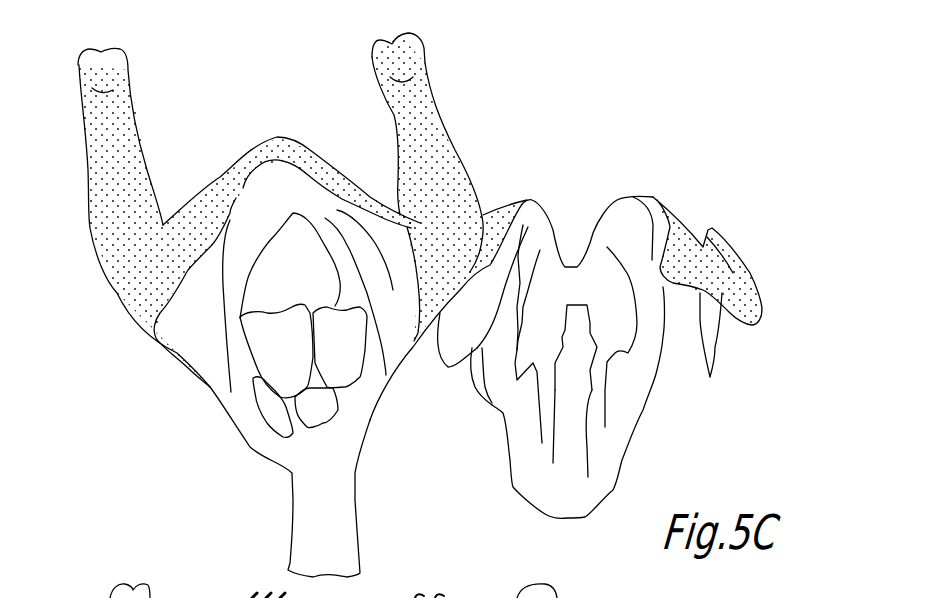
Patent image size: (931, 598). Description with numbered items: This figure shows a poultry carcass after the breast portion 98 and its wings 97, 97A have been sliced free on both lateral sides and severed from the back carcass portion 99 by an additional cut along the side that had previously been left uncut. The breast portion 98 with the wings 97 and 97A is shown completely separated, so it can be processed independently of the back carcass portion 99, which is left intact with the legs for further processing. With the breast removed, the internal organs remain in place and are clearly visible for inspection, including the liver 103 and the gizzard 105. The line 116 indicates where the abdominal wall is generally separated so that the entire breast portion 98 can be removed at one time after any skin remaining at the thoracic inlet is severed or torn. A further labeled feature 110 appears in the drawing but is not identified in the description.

The separation line of the abdominal wall 116 is at (238, 190).
The tendon graft strap 110 is at (306, 131).
The gizzard 105 is at (296, 228).
The back carcass portion 99 is at (218, 358).
The liver 103 is at (333, 352).
The wing 97 is at (718, 243).
The wing 97A is at (504, 222).
The breast portion 98 is at (623, 397).